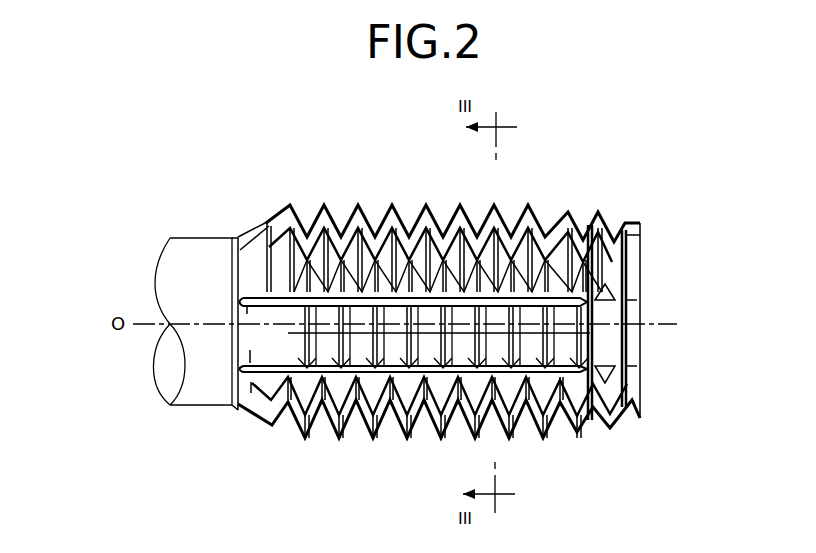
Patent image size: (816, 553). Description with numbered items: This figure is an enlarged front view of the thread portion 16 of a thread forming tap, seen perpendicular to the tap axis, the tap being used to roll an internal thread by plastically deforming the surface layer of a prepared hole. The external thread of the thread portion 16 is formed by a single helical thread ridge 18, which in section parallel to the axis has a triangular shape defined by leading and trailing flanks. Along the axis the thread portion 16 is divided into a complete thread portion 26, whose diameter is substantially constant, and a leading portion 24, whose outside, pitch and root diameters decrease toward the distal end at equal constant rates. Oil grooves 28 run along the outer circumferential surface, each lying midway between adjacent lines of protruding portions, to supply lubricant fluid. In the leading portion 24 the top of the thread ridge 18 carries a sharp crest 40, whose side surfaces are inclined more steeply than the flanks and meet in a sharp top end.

The thread portion 16 is at (291, 142).
The thread ridge 18 is at (414, 416).
The leading portion 24 is at (640, 173).
The complete thread portion 26 is at (548, 173).
The oil groove 28 is at (468, 292).
The sharp crest 40 is at (614, 414).